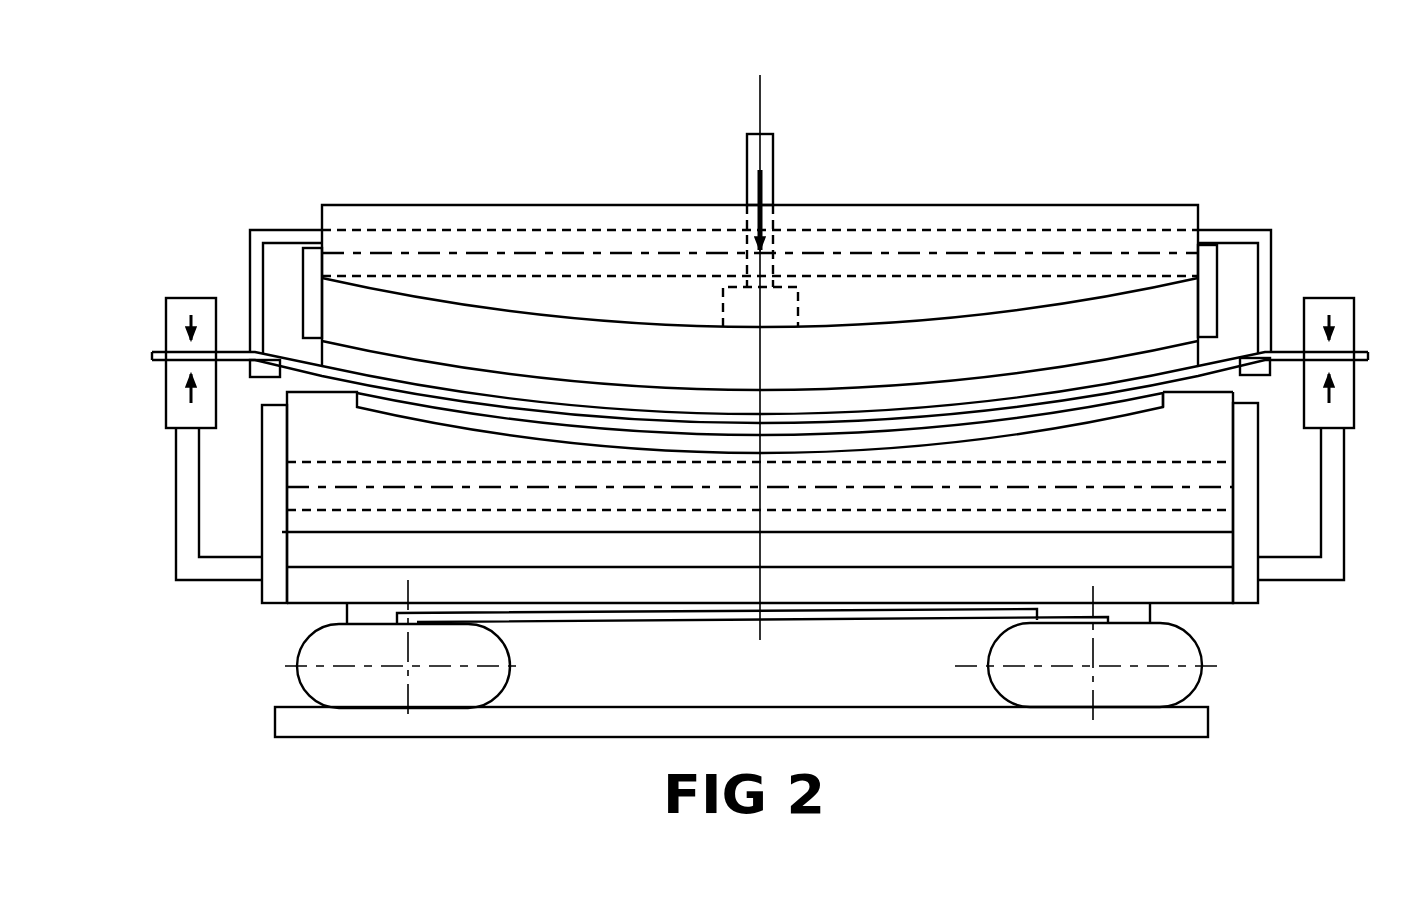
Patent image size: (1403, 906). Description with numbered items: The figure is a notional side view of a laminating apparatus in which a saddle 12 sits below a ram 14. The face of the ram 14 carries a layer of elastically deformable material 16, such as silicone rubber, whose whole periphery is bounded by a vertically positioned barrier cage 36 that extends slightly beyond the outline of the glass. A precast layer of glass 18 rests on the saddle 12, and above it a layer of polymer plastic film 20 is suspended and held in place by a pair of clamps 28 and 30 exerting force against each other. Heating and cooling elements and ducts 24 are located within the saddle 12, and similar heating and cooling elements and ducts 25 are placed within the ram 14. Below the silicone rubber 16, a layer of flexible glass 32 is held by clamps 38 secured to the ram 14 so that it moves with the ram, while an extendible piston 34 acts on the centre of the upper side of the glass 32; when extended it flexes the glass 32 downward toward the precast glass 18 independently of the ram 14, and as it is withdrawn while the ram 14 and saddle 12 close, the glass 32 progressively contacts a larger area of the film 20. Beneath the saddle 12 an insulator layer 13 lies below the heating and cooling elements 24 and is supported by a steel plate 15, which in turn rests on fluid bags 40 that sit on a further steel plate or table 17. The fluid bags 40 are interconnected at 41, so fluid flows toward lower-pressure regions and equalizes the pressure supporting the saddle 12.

The saddle 12 is at (336, 439).
The insulator layer 13 is at (826, 553).
The ram 14 is at (976, 203).
The steel plate 15 is at (1207, 590).
The layer of elastically deformable material 16 is at (449, 316).
The steel plate or table 17 is at (300, 729).
The precast layer of glass 18 is at (529, 429).
The layer of polymer plastic film 20 is at (1209, 387).
The heating and cooling elements and ducts 24 is at (1037, 499).
The heating and cooling elements and ducts 25 is at (576, 234).
The clamp 28 is at (199, 422).
The clamp 30 is at (191, 298).
The flexible glass layer 32 is at (1071, 391).
The extendible piston 34 is at (768, 147).
The barrier cage 36 is at (307, 248).
The clamps 38 is at (257, 230).
The fluid bags 40 is at (302, 650).
The interconnection 41 is at (633, 627).